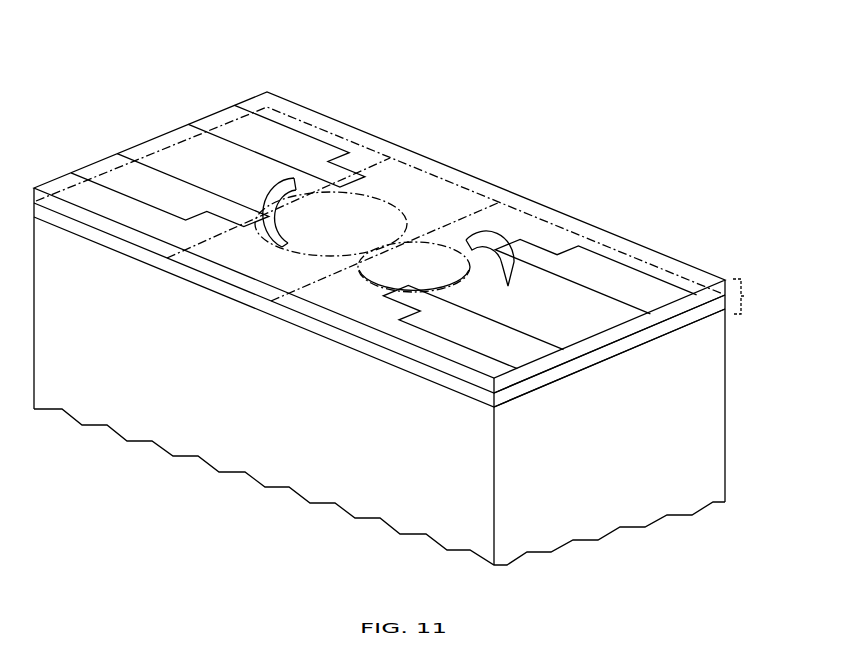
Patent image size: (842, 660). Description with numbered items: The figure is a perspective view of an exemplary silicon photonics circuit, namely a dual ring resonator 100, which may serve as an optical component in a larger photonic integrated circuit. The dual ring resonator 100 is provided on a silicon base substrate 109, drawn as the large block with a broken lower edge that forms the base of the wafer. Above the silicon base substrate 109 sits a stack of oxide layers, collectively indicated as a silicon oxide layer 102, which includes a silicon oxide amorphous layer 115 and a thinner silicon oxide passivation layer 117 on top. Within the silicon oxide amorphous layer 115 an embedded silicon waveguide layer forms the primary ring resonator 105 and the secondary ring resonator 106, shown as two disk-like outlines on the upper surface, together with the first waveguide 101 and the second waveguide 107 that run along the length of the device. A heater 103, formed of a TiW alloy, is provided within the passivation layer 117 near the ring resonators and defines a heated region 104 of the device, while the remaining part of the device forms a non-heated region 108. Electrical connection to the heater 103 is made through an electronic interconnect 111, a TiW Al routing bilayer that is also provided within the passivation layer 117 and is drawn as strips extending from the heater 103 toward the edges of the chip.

The dual ring resonator 100 is at (82, 70).
The first waveguide 101 is at (118, 266).
The silicon oxide layer 102 is at (745, 296).
The heater 103 is at (280, 196).
The heated region 104 is at (246, 262).
The primary ring resonator 105 is at (394, 196).
The secondary ring resonator 106 is at (444, 228).
The second waveguide 107 is at (590, 242).
The non-heated region 108 is at (362, 308).
The silicon base substrate 109 is at (412, 459).
The electronic interconnect 111 is at (228, 122).
The silicon oxide amorphous layer 115 is at (592, 346).
The silicon oxide passivation layer 117 is at (656, 334).